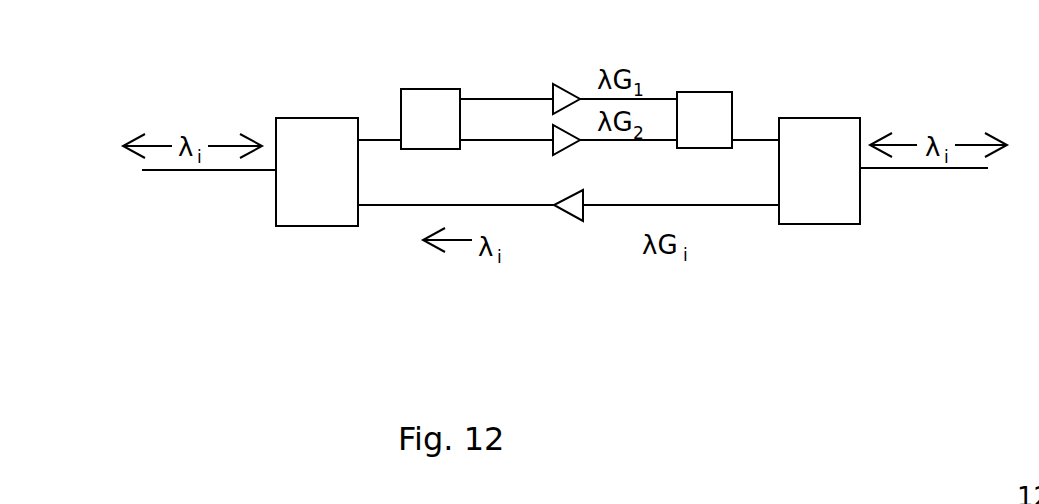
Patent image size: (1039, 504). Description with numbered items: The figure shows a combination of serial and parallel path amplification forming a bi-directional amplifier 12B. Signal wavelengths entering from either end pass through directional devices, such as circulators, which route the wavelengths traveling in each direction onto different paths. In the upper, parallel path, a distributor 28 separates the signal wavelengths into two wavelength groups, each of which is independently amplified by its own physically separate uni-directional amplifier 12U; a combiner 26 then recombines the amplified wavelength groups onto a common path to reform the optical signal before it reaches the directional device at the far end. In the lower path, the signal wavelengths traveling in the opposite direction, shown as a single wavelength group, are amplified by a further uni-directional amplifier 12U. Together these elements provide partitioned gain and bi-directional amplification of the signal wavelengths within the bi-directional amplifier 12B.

The optical distributor 28 is at (430, 89).
The optical combiner 26 is at (707, 92).
The uni-directional amplifier 12U is at (570, 241).
The bi-directional amplifier 12B is at (533, 303).